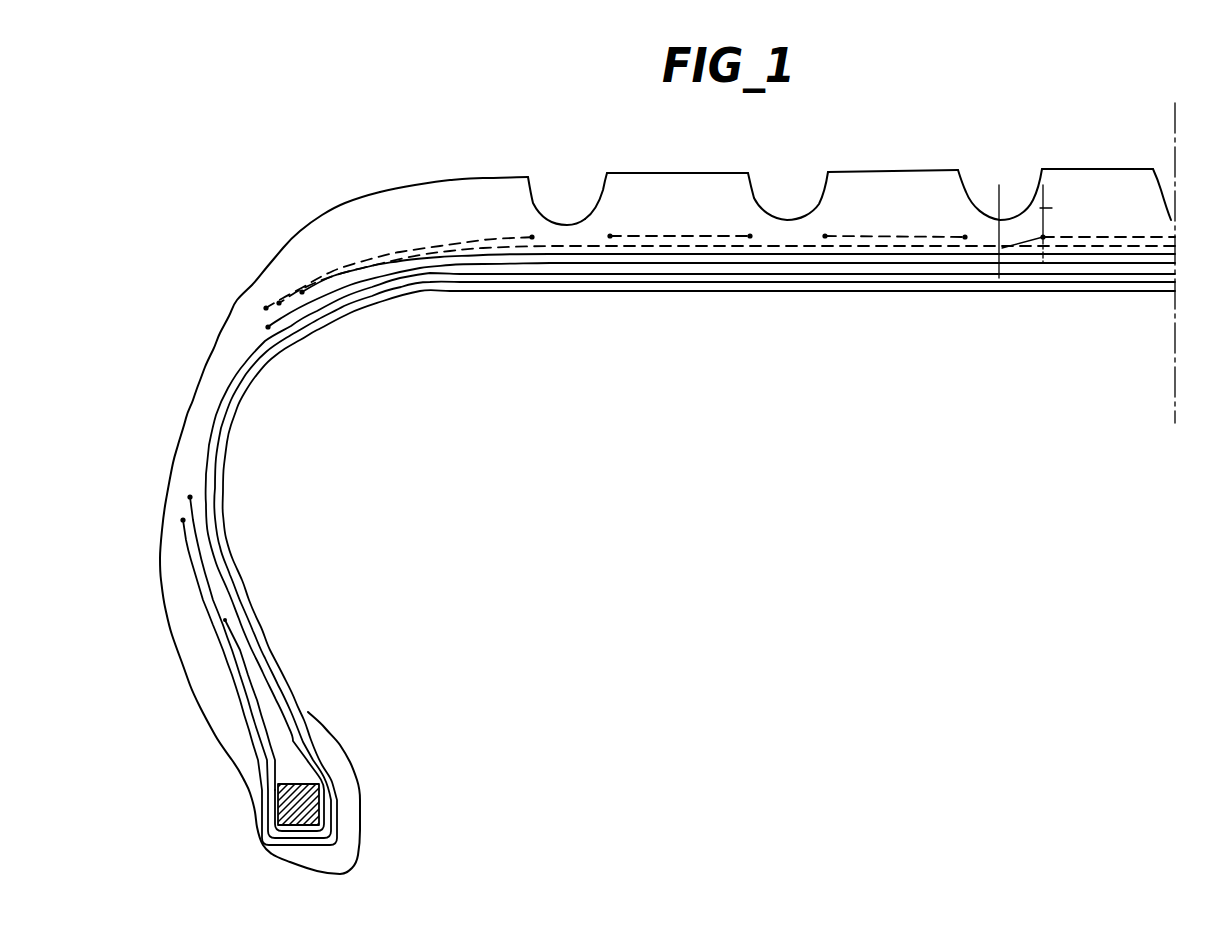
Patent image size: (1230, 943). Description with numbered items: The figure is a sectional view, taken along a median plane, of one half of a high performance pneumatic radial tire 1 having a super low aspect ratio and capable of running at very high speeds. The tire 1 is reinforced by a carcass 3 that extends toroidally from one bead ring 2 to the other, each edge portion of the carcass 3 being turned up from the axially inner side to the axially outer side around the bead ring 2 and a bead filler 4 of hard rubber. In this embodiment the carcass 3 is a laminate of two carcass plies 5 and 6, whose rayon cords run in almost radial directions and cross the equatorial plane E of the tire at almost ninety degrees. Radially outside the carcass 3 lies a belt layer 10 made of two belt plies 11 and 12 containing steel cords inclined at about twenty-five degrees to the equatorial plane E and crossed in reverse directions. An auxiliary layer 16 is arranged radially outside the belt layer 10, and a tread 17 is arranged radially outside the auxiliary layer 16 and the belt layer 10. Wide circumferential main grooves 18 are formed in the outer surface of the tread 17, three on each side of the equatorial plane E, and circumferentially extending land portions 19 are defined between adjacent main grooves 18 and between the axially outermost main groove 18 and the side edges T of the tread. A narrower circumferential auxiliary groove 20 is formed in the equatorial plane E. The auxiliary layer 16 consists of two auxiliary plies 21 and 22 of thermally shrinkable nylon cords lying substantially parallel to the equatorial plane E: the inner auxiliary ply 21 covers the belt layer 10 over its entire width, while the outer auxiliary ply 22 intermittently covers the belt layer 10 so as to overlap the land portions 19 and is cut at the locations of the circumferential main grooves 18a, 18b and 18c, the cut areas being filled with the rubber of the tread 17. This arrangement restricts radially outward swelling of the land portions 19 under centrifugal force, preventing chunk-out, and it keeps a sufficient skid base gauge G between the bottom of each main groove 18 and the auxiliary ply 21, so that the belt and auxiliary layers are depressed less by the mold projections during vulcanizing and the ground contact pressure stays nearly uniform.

The pneumatic radial tire 1 is at (212, 284).
The bead ring 2 is at (318, 792).
The carcass 3 is at (228, 497).
The bead filler 4 is at (283, 722).
The carcass ply 5 is at (218, 452).
The carcass ply 6 is at (223, 410).
The belt layer 10 is at (950, 265).
The belt ply 11 is at (1018, 265).
The belt ply 12 is at (1060, 257).
The auxiliary layer 16 is at (476, 236).
The tread 17 is at (708, 175).
The circumferential main groove 18 is at (540, 200).
The circumferential main groove 18a is at (600, 192).
The circumferential main groove 18b is at (756, 200).
The circumferential main groove 18c is at (970, 190).
The land portion 19 is at (432, 183).
The circumferential auxiliary groove 20 is at (1162, 185).
The auxiliary ply 21 is at (803, 246).
The auxiliary ply 22 is at (653, 237).
The side edge of the tread T is at (289, 243).
The skid base gauge G is at (1087, 231).
The equatorial plane E is at (1165, 383).